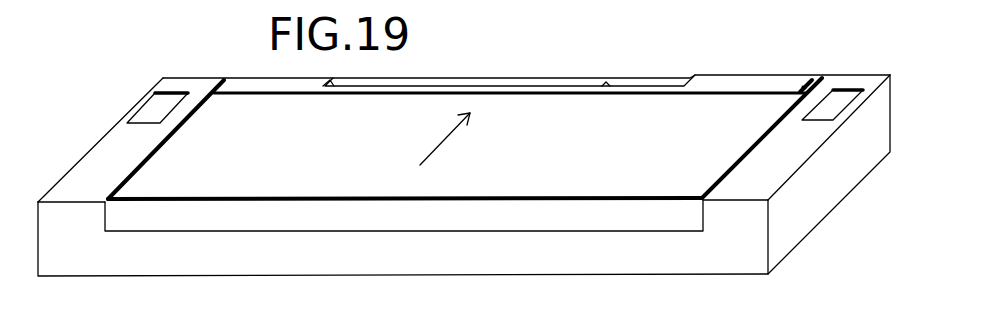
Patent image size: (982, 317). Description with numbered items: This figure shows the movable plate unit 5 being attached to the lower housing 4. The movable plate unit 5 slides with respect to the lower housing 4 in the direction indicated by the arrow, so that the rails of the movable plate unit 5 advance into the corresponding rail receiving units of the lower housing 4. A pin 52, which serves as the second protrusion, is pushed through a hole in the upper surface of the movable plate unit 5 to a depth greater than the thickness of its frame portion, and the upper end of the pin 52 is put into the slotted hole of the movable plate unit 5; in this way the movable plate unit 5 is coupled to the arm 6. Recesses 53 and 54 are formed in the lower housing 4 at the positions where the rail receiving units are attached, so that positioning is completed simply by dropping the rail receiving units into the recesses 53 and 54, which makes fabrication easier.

The lower housing 4 is at (430, 276).
The movable plate unit 5 is at (771, 75).
The arm 6 is at (510, 78).
The pin 52 is at (804, 85).
The recess 53 is at (174, 94).
The recess 54 is at (845, 91).